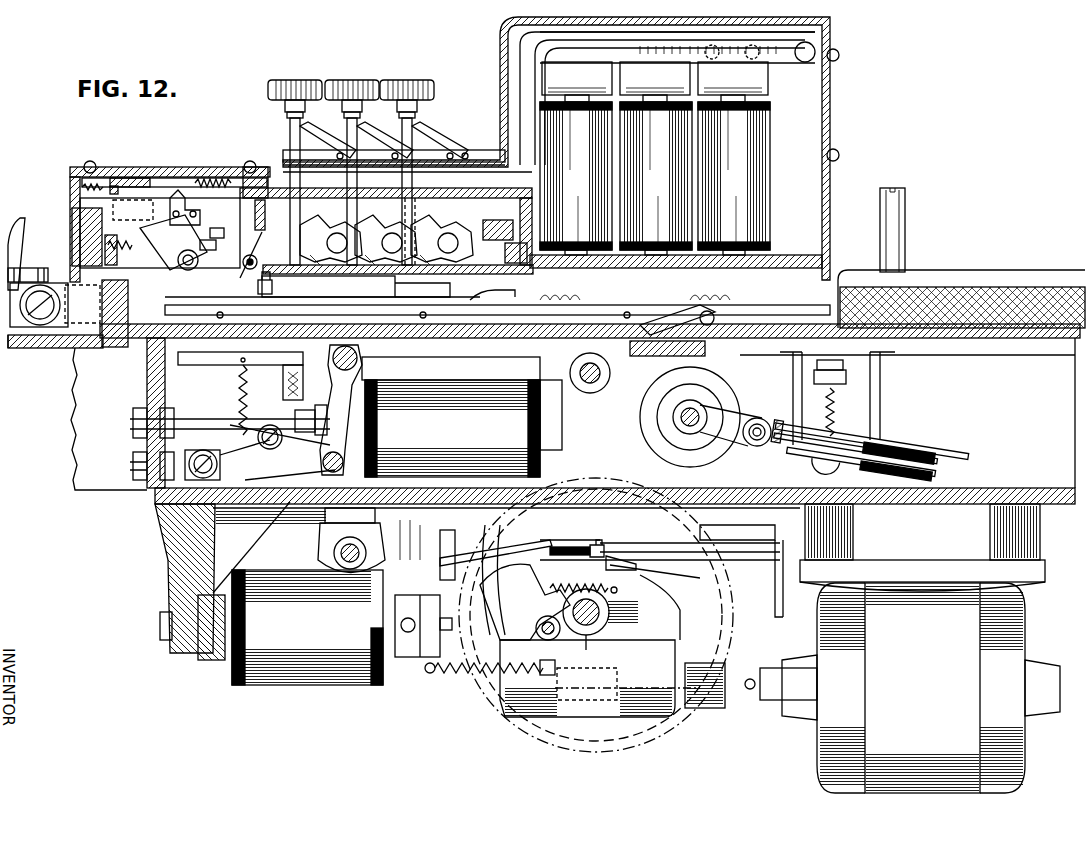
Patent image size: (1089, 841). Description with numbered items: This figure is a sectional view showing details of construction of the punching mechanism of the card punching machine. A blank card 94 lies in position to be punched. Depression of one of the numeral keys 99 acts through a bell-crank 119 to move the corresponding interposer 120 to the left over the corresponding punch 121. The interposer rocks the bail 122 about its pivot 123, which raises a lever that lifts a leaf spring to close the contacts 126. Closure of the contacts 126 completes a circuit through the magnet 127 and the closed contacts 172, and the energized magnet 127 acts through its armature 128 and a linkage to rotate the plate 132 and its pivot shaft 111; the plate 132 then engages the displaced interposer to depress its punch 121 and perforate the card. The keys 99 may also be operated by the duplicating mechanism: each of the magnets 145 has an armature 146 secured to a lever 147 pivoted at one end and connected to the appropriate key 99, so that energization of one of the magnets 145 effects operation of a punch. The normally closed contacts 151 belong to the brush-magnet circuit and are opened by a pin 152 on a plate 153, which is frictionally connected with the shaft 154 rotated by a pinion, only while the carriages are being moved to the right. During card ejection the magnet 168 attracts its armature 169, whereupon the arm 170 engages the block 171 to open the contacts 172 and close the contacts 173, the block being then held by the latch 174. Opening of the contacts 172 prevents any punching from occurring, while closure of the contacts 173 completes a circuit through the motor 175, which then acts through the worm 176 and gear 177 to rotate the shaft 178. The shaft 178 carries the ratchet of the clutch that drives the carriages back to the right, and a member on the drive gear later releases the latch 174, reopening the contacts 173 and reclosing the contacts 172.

The blank card 94 is at (978, 272).
The numeral keys 99 is at (375, 80).
The shaft 111 is at (133, 208).
The bell-crank 119 is at (497, 296).
The interposer 120 is at (212, 215).
The punch 121 is at (130, 313).
The bail 122 is at (258, 245).
The pivot 123 is at (255, 272).
The contacts 126 is at (280, 378).
The magnet 127 is at (462, 417).
The armature 128 is at (335, 455).
The plate 132 is at (118, 188).
The magnets 145 is at (655, 178).
The armature 146 is at (722, 90).
The lever 147 is at (677, 47).
The contacts 151 is at (780, 420).
The pin 152 is at (752, 446).
The plate 153 is at (675, 455).
The shaft 154 is at (700, 410).
The magnet 168 is at (307, 627).
The armature 169 is at (410, 660).
The arm 170 is at (476, 550).
The block 171 is at (572, 548).
The contacts 172 is at (612, 552).
The contacts 173 is at (676, 600).
The latch 174 is at (548, 602).
The motor 175 is at (902, 648).
The worm 176 is at (605, 705).
The gear 177 is at (675, 648).
The shaft 178 is at (600, 629).